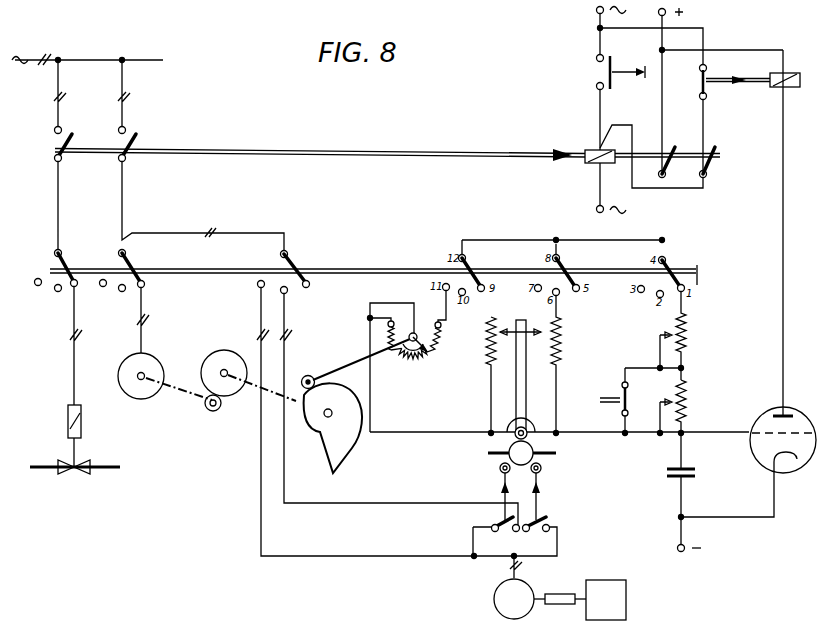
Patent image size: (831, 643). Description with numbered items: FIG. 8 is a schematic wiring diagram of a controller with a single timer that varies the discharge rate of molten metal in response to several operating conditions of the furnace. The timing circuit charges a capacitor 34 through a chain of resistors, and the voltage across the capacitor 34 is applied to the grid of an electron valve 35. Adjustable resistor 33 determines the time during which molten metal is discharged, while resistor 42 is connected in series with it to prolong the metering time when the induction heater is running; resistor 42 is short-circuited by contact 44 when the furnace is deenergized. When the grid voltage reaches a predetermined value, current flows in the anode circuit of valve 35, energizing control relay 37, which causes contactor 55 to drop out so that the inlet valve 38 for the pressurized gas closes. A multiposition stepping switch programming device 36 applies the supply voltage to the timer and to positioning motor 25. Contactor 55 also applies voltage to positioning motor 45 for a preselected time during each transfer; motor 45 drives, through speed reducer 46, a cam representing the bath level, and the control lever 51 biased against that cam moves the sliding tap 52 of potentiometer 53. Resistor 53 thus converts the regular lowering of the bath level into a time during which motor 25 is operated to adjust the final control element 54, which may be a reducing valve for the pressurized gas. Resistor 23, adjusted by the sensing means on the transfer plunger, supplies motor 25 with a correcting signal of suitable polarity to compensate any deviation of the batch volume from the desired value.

The resistor 23 is at (560, 332).
The positioning motor 25 is at (494, 592).
The adjustable resistor 33 is at (686, 331).
The capacitor 34 is at (665, 473).
The electron valve 35 is at (805, 413).
The programming device 36 is at (429, 272).
The control relay 37 is at (800, 79).
The inlet valve 38 is at (66, 411).
The resistor 42 is at (686, 395).
The contact 44 is at (621, 388).
The positioning motor 45 is at (153, 356).
The speed reducer 46 is at (224, 356).
The control lever 51 is at (355, 368).
The sliding tap 52 is at (432, 360).
The potentiometer 53 is at (404, 364).
The final control element 54 is at (607, 586).
The contactor 55 is at (598, 147).